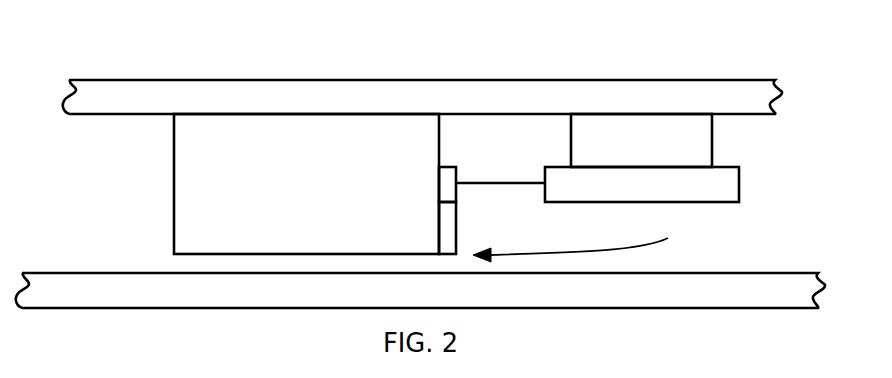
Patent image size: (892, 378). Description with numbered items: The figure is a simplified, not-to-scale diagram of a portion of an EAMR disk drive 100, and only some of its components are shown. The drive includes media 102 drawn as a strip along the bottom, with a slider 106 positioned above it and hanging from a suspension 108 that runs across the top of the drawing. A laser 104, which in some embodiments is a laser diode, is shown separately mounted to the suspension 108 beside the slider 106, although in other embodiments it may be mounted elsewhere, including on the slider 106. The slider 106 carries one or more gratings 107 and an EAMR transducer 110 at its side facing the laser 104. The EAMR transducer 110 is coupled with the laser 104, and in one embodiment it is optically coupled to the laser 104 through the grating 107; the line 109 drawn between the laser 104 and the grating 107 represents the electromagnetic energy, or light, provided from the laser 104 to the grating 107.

The EAMR disk drive 100 is at (447, 38).
The media 102 is at (830, 305).
The laser 104 is at (739, 202).
The slider 106 is at (173, 238).
The grating 107 is at (457, 167).
The suspension 108 is at (105, 79).
The line representing electromagnetic energy 109 is at (527, 186).
The EAMR transducer 110 is at (457, 243).